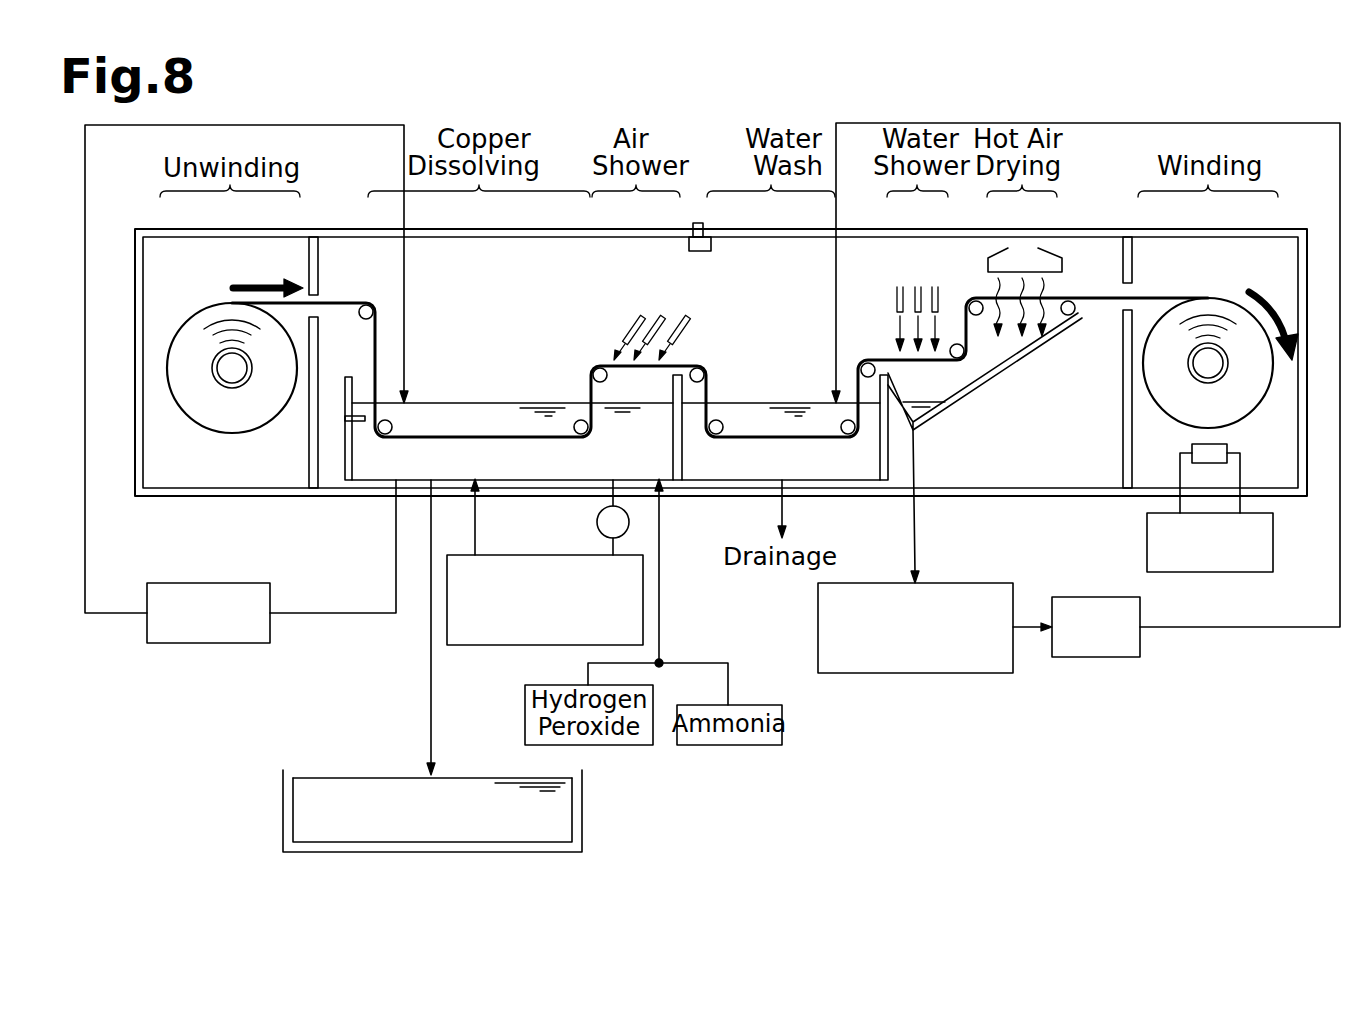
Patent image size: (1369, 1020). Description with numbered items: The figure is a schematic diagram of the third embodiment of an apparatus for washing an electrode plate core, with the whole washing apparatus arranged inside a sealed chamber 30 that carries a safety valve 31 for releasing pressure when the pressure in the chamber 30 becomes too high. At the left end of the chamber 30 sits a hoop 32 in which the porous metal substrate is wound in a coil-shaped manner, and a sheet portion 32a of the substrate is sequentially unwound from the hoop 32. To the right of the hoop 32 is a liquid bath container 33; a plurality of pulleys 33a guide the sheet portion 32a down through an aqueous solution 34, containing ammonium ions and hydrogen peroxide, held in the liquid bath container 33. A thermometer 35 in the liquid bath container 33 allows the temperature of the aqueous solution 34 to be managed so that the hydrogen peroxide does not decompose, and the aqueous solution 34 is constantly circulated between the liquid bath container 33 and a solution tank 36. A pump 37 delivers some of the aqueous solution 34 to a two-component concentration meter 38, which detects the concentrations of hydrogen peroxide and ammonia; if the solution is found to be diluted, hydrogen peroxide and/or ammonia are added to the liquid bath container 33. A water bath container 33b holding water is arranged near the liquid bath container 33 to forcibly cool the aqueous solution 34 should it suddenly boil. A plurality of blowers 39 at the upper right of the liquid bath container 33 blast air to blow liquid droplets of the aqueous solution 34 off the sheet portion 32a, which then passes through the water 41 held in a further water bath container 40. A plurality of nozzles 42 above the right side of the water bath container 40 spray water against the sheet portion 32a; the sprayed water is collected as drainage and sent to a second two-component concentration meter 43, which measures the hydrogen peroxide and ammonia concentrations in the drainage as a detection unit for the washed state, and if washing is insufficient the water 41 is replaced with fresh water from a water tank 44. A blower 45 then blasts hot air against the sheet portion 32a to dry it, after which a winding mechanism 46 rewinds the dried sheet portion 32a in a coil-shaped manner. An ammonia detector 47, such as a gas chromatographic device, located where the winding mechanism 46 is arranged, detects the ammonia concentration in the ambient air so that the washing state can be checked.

The sealed chamber 30 is at (197, 500).
The safety valve 31 is at (702, 255).
The hoop 32 is at (245, 418).
The sheet portion 32a is at (341, 301).
The liquid bath container 33 is at (360, 470).
The pulleys 33a is at (386, 418).
The water bath container 33b is at (582, 808).
The aqueous solution 34 is at (477, 415).
The thermometer 35 is at (362, 425).
The solution tank 36 is at (207, 643).
The pump 37 is at (597, 520).
The two-component concentration meter 38 is at (522, 555).
The blowers 39 is at (631, 330).
The water bath container 40 is at (683, 462).
The water 41 is at (762, 410).
The nozzles 42 is at (897, 300).
The two-component concentration meter 43 is at (933, 583).
The water tank 44 is at (1096, 597).
The blower 45 is at (1050, 248).
The winding mechanism 46 is at (1213, 380).
The ammonia detector 47 is at (1273, 540).